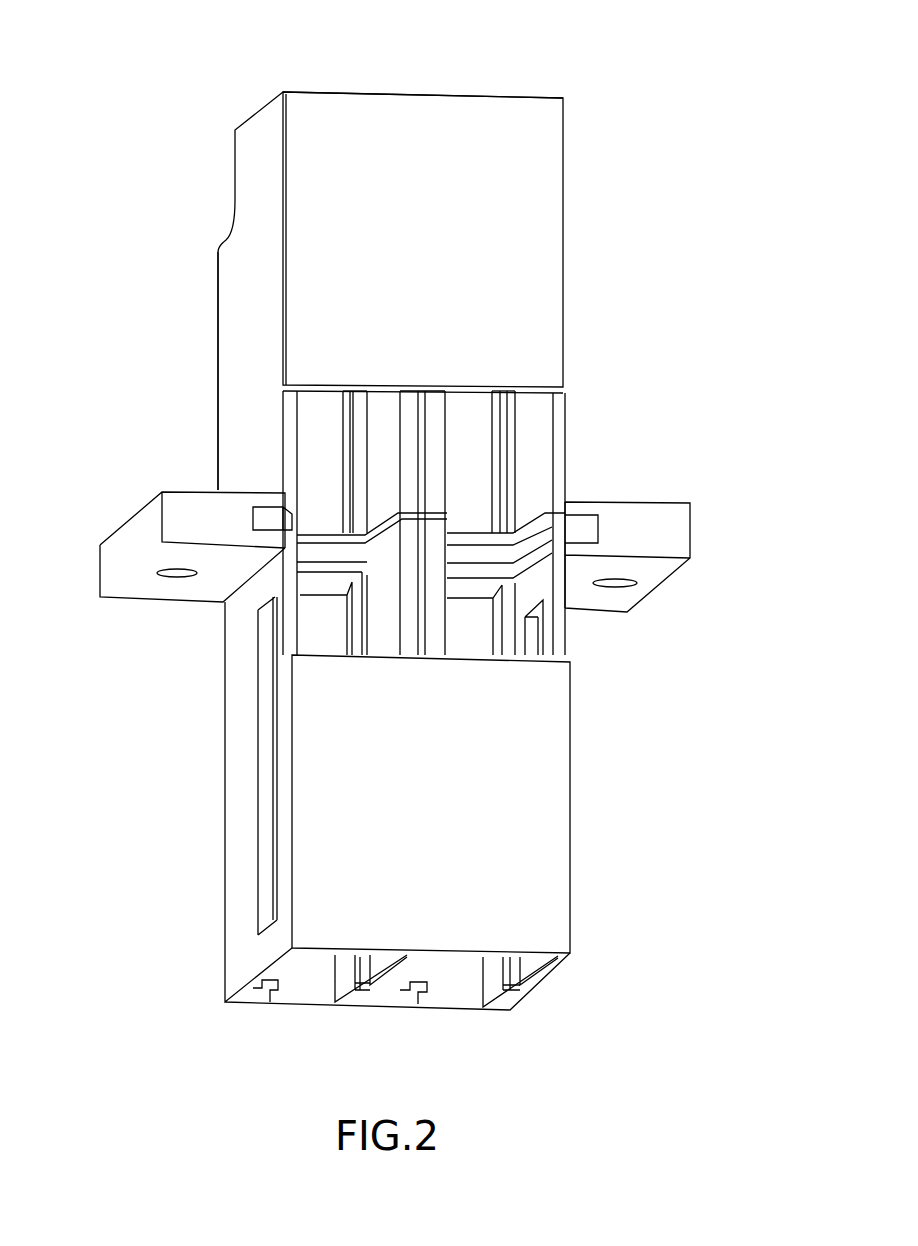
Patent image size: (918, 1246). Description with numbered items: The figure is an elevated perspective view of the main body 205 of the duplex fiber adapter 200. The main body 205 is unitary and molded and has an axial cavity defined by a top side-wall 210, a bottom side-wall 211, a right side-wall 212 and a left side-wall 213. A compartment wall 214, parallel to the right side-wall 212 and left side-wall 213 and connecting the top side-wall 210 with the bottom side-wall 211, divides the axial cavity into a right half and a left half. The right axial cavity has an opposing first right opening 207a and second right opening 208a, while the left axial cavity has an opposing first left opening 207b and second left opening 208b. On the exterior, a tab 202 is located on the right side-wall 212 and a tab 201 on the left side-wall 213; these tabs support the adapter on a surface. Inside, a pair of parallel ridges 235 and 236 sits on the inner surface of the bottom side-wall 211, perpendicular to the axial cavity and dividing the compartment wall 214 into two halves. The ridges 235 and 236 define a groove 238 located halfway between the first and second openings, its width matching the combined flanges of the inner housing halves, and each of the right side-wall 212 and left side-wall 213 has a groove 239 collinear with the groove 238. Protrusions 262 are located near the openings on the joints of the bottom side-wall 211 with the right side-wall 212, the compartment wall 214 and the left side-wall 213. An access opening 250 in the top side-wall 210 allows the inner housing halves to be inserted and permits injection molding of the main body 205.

The duplex fiber adapter 200 is at (138, 72).
The tab 201 is at (126, 554).
The tab 202 is at (655, 540).
The main body 205 is at (575, 197).
The first right opening 207a is at (475, 97).
The first left opening 207b is at (316, 90).
The second right opening 208a is at (457, 990).
The second left opening 208b is at (300, 990).
The top side-wall 210 is at (525, 820).
The bottom side-wall 211 is at (480, 628).
The right side-wall 212 is at (531, 471).
The left side-wall 213 is at (250, 375).
The compartment wall 214 is at (383, 452).
The ridge 235 is at (328, 540).
The ridge 236 is at (340, 572).
The groove 238 is at (310, 553).
The groove 239 is at (272, 520).
The access opening 250 is at (468, 435).
The protrusions 262 is at (265, 995).